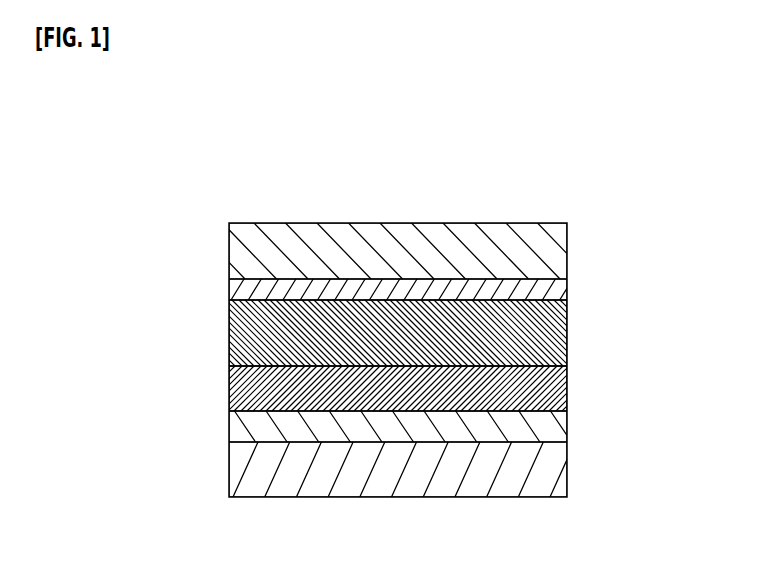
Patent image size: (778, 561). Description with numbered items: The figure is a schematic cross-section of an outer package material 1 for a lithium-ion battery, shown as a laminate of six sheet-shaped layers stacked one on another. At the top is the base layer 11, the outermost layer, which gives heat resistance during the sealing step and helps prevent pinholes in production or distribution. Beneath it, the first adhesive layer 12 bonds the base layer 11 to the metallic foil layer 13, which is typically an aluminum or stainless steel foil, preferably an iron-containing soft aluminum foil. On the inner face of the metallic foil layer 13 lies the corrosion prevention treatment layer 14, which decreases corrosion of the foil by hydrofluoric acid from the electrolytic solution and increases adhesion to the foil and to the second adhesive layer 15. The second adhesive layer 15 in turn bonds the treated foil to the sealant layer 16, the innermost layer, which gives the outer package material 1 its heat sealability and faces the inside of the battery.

The outer package material 1 is at (552, 176).
The base layer 11 is at (568, 248).
The first adhesive layer 12 is at (568, 288).
The metallic foil layer 13 is at (568, 332).
The corrosion prevention treatment layer 14 is at (568, 396).
The second adhesive layer 15 is at (568, 433).
The sealant layer 16 is at (568, 474).